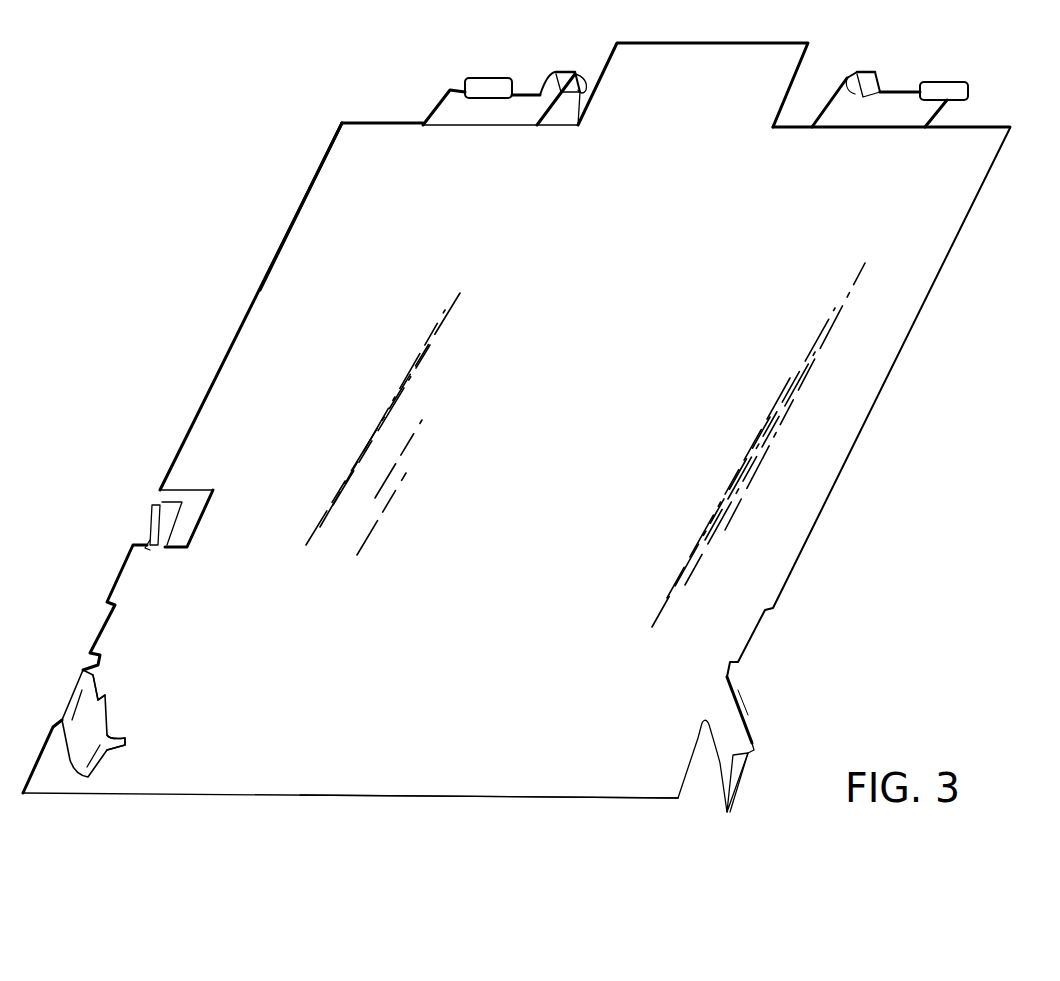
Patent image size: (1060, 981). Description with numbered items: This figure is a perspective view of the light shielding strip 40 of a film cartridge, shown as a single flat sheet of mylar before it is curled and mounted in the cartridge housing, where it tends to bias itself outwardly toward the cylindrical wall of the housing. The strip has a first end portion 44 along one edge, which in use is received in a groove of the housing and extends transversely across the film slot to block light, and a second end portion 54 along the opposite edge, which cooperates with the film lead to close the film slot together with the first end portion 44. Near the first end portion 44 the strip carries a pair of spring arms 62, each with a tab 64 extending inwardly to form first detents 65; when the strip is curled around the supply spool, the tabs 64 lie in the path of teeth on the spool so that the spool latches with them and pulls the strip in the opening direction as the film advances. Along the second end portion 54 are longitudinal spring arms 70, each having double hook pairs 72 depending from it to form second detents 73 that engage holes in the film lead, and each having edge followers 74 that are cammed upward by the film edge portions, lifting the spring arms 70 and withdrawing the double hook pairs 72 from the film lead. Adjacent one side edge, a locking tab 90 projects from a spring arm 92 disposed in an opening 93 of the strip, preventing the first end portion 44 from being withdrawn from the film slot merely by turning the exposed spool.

The light shielding strip 40 is at (580, 411).
The first end portion 44 is at (442, 785).
The second end portion 54 is at (338, 167).
The spring arms 62 is at (93, 727).
The tab 64 is at (123, 740).
The first detents 65 is at (110, 692).
The longitudinal spring arms 70 is at (508, 117).
The double hook pairs 72 is at (540, 88).
The second detents 73 is at (565, 60).
The edge followers 74 is at (460, 96).
The locking tab 90 is at (152, 527).
The spring arm 92 is at (148, 535).
The opening 93 is at (192, 498).